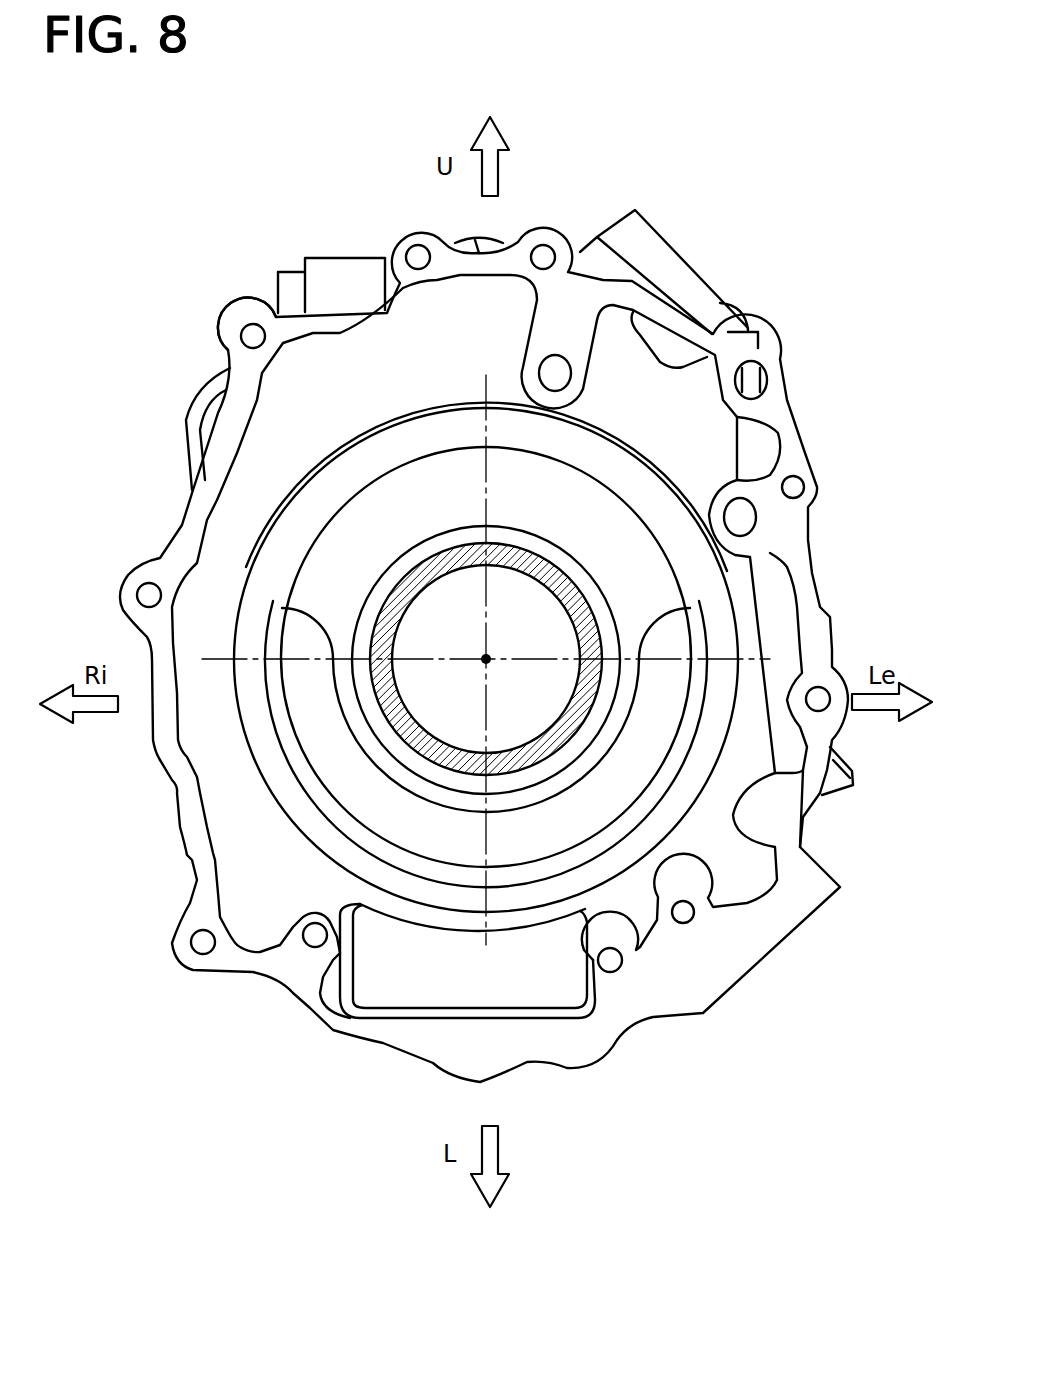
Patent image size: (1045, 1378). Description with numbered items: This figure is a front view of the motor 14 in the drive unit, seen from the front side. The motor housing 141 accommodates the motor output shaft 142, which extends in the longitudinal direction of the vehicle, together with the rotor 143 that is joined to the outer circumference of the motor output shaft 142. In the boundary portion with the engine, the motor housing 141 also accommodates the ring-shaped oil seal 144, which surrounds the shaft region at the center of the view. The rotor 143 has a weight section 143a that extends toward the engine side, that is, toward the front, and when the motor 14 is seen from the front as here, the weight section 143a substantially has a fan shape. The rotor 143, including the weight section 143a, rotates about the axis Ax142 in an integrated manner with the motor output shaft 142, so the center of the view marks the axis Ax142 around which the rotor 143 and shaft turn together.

The motor 14 is at (787, 375).
The motor housing 141 is at (258, 310).
The motor output shaft 142 is at (573, 725).
The axis Ax142 is at (485, 648).
The rotor 143 is at (630, 640).
The weight section 143a is at (638, 545).
The oil seal 144 is at (380, 727).